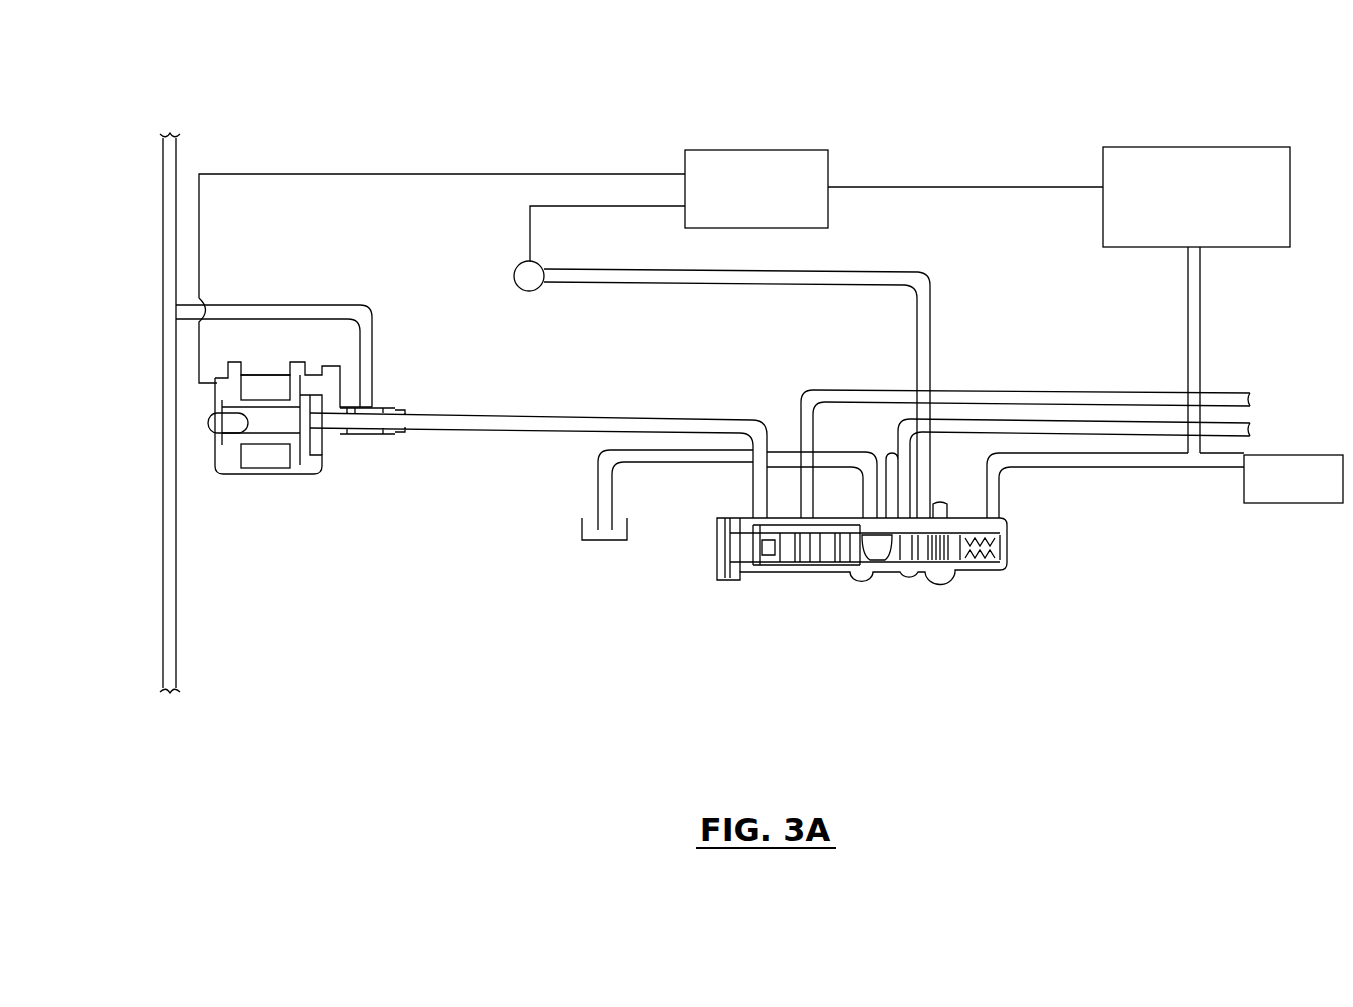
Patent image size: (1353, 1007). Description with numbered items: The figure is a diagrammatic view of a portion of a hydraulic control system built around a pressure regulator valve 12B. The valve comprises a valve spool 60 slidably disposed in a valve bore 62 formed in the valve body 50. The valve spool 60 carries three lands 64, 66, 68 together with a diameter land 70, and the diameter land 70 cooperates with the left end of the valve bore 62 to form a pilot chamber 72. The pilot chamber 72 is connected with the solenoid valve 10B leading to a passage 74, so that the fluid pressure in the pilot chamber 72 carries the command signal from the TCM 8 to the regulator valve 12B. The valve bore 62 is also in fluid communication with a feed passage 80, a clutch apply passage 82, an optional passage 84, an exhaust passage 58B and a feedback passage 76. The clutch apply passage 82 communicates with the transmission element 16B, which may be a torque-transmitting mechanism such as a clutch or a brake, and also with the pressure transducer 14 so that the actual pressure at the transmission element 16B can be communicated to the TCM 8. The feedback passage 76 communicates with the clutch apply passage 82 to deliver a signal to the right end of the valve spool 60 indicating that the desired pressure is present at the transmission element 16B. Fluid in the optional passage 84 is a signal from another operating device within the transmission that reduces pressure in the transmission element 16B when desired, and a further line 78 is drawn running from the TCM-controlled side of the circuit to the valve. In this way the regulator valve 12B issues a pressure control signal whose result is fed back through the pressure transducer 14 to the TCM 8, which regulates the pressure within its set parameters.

The TCM 8 is at (755, 150).
The pressure transducer 14 is at (1130, 146).
The solenoid valve 10B is at (265, 480).
The pressure regulator valve 12B is at (925, 580).
The transmission element 16B is at (1288, 504).
The valve body 50 is at (1010, 546).
The exhaust passage 58B is at (685, 463).
The valve spool 60 is at (880, 565).
The valve bore 62 is at (808, 548).
The land 64 is at (952, 574).
The land 66 is at (902, 564).
The land 68 is at (843, 570).
The diameter land 70 is at (760, 548).
The pilot chamber 72 is at (725, 535).
The passage 74 is at (543, 418).
The feedback passage 76 is at (1003, 480).
The supply passage 78 is at (915, 370).
The feed passage 80 is at (898, 440).
The clutch apply passage 82 is at (1170, 470).
The optional passage 84 is at (798, 418).